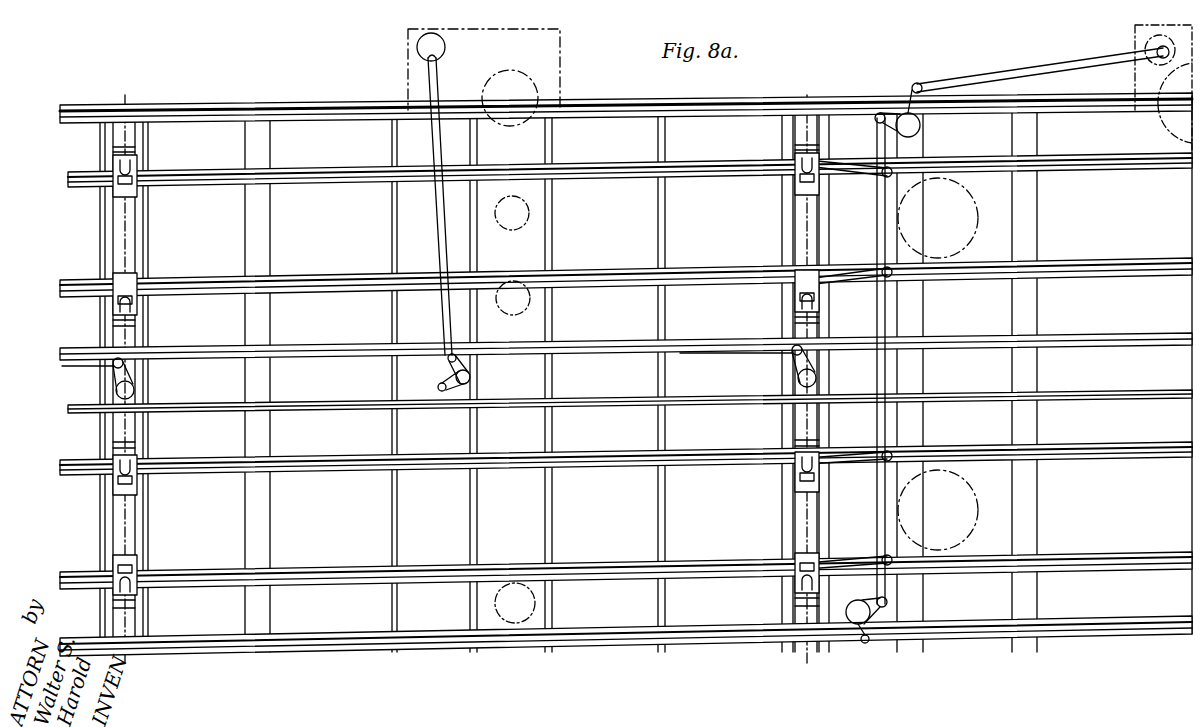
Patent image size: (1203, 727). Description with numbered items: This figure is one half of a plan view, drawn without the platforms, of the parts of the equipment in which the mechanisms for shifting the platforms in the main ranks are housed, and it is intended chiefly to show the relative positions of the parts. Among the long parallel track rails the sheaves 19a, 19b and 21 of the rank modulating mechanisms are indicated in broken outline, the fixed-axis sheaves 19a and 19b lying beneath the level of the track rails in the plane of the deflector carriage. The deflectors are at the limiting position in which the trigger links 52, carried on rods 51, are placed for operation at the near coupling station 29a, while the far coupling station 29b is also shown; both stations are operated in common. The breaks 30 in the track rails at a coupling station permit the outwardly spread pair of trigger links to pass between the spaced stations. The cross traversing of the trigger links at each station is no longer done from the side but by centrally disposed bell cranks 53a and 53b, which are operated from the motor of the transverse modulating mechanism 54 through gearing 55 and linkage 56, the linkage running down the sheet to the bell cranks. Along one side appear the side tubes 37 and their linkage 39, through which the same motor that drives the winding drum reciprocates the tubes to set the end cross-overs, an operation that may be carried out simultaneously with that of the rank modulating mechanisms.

The fixed axis sheave 19a is at (972, 228).
The fixed axis sheave 19b is at (968, 522).
The sheave 21 is at (1158, 115).
The near coupling station 29a is at (812, 608).
The far coupling station 29b is at (136, 620).
The break in the track rail 30 is at (1150, 48).
The side tube 37 is at (878, 104).
The linkage 39 is at (1026, 76).
The rod 51 is at (1118, 178).
The trigger link 52 is at (850, 178).
The bell crank 53a is at (797, 384).
The bell crank 53b is at (135, 388).
The transverse modulating mechanism 54 is at (562, 78).
The gearing 55 is at (417, 45).
The linkage 56 is at (430, 230).